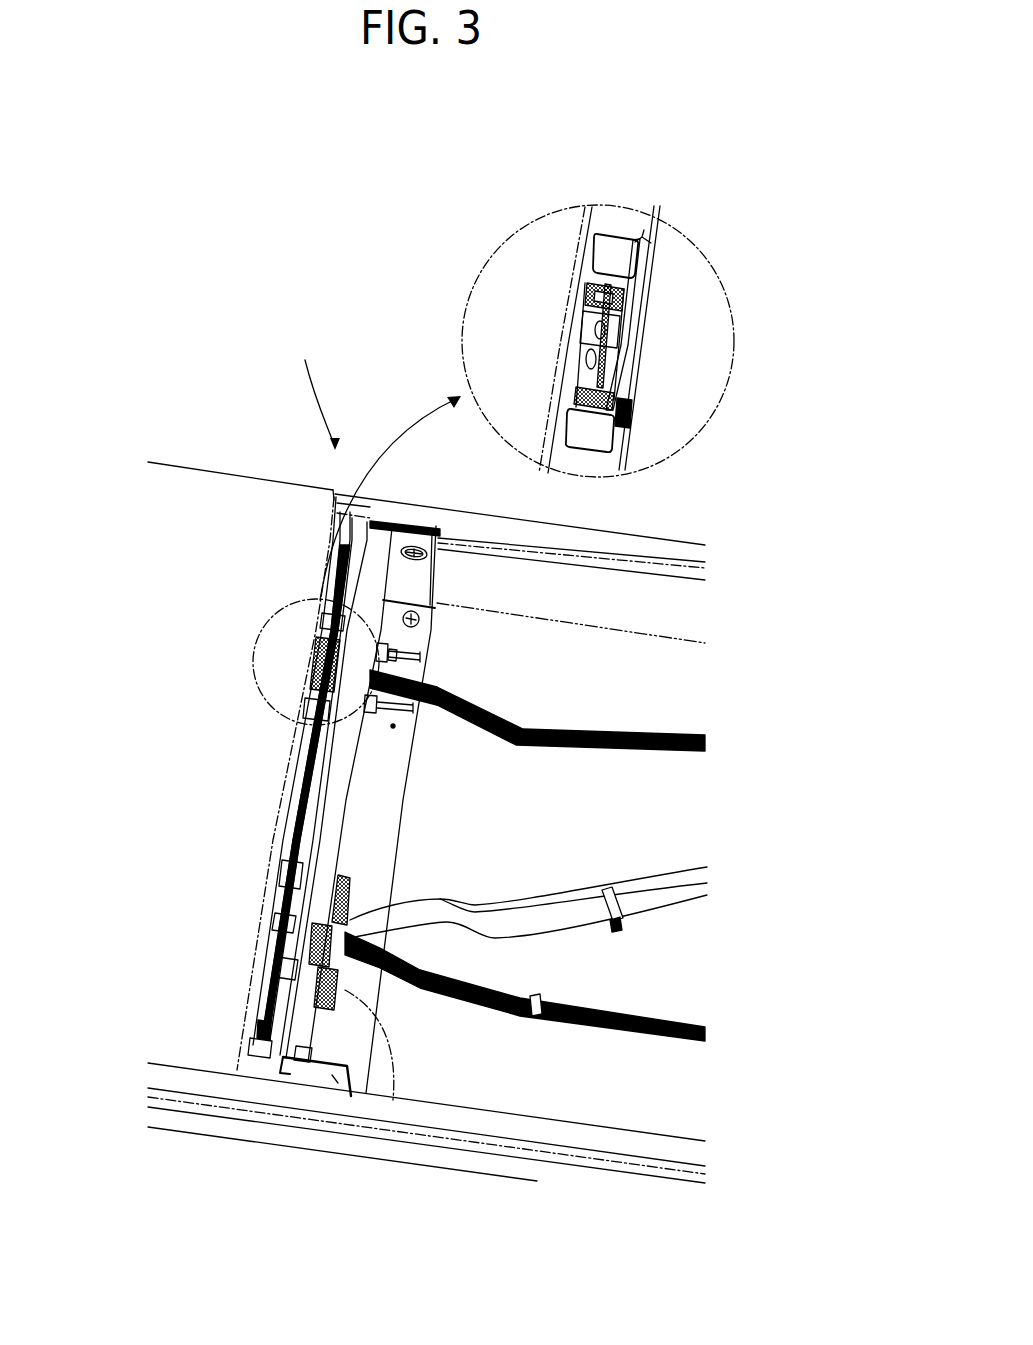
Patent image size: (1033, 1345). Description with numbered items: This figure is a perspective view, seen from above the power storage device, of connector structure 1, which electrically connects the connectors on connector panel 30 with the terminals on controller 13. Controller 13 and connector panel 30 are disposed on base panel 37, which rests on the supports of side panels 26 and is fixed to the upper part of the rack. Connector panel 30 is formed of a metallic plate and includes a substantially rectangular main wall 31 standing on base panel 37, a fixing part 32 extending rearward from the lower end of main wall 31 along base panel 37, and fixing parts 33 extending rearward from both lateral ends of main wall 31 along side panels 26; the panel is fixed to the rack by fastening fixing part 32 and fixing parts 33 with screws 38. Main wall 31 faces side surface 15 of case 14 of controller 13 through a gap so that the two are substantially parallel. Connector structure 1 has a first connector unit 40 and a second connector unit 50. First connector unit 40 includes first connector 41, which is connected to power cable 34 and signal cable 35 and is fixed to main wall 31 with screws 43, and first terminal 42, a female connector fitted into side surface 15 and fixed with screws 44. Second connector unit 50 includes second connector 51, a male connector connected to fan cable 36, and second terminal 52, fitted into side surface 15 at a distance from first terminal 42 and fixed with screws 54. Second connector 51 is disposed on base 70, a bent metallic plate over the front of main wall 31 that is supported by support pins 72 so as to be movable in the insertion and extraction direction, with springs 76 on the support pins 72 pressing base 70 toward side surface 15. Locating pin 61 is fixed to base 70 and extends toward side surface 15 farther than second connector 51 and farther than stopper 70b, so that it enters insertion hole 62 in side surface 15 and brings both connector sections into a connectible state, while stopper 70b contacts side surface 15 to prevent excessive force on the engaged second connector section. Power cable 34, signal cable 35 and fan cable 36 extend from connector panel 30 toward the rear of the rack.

The connector structure 1 is at (312, 353).
The controller 13 is at (188, 466).
The case 14 is at (170, 561).
The side surface 15 is at (285, 795).
The side panels 26 is at (668, 625).
The connector panel 30 is at (385, 525).
The main wall 31 is at (322, 777).
The fixing part 32 is at (388, 826).
The fixing parts 33 is at (432, 592).
The power cable 34 is at (667, 896).
The signal cable 35 is at (670, 1040).
The fan cable 36 is at (672, 752).
The base panel 37 is at (628, 677).
The screws 38 is at (415, 548).
The first connector unit 40 is at (258, 1068).
The first connector 41 is at (393, 1100).
The first terminal 42 is at (277, 962).
The screws 43 is at (305, 1053).
The screws 44 is at (300, 1030).
The second connector unit 50 is at (305, 622).
The second connector 51 is at (633, 345).
The second terminal 52 is at (578, 325).
The screws 54 is at (575, 392).
The locating pin 61 is at (408, 678).
The insertion hole 62 is at (588, 290).
The base 70 is at (646, 240).
The stopper 70b is at (634, 236).
The support pin 72 is at (424, 653).
The spring 76 is at (636, 420).